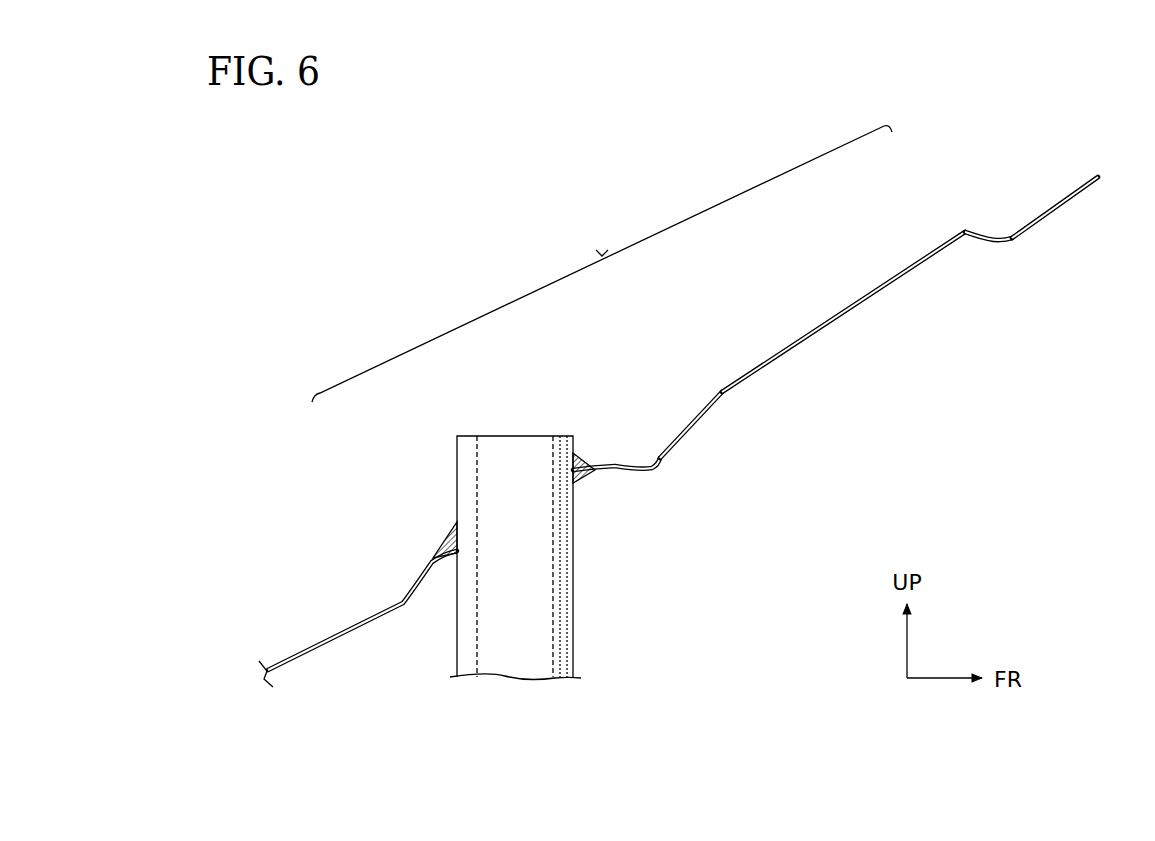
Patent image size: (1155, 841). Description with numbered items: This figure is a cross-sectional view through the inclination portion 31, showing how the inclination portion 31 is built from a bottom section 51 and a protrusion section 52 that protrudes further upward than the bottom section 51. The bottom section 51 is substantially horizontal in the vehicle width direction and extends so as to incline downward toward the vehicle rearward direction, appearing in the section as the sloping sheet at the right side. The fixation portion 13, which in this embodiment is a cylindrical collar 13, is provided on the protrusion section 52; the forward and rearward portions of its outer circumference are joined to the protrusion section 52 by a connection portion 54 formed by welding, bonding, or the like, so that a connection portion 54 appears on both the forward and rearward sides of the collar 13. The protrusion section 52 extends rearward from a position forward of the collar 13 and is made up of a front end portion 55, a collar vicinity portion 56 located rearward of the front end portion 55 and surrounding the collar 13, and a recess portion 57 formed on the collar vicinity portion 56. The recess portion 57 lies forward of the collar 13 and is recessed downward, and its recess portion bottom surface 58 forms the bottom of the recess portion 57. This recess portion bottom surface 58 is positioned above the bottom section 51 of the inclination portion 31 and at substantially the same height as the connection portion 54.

The fixation portion (collar) 13 is at (532, 612).
The inclination portion 31 is at (997, 222).
The bottom section 51 is at (1053, 203).
The protrusion section 52 is at (602, 264).
The connection portion 54 is at (446, 541).
The front end portion 55 is at (930, 252).
The collar vicinity portion 56 is at (427, 560).
The recess portion 57 is at (695, 408).
The recess portion bottom surface 58 is at (628, 469).